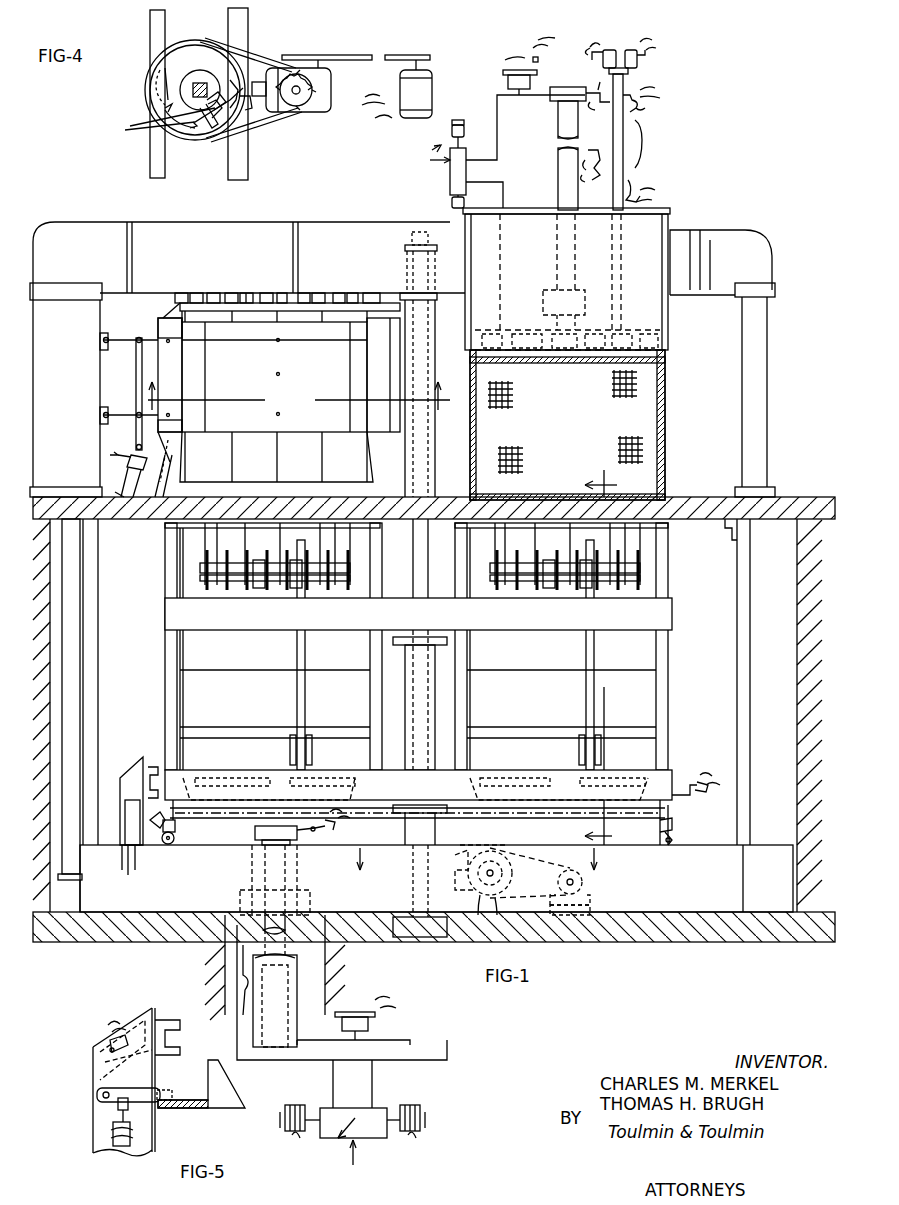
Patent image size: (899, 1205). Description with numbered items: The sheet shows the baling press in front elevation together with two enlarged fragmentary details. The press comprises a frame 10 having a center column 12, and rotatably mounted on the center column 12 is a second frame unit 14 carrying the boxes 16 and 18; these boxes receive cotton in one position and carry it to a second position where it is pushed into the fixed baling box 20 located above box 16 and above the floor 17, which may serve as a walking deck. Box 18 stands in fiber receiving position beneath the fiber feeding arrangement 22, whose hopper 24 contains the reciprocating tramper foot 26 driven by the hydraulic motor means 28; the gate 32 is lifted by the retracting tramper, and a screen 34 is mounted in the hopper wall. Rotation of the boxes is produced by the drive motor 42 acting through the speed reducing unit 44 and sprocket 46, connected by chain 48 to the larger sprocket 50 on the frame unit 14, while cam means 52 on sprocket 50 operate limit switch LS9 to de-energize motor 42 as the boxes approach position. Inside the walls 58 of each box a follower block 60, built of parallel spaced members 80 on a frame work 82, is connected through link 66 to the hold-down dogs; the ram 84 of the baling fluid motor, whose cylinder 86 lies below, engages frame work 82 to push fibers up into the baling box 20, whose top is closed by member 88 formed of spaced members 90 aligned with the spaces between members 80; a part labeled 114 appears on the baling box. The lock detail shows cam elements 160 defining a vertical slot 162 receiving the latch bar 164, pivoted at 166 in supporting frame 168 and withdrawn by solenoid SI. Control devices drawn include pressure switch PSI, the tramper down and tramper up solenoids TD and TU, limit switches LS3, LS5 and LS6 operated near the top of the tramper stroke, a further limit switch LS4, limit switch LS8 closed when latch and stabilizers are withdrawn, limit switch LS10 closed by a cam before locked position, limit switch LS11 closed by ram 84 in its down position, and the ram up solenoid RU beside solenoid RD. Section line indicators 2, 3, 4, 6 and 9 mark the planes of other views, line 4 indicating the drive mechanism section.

In FIG. 1, the frame 2 is at (55, 785).
In FIG. 1, the upper housing 3 is at (762, 220).
In FIG. 1, the line 4— 4 is at (475, 873).
In FIG. 1, the section line 6- 6 is at (592, 659).
In FIG. 1, the section line 9- 9 is at (298, 385).
In FIG. 1, the frame 10 is at (745, 890).
In FIG. 1, the center column 12 is at (420, 582).
In FIG. 1, the second frame unit 14 is at (660, 616).
In FIG. 4, the second frame unit 14 is at (238, 172).
In FIG. 1, the box 16 is at (190, 656).
In FIG. 1, the floor 17 is at (795, 510).
In FIG. 1, the box 18 is at (645, 658).
In FIG. 1, the baling box 20 is at (325, 388).
In FIG. 1, the fiber feeding arrangement 22 is at (630, 420).
In FIG. 1, the hopper 24 is at (572, 440).
In FIG. 1, the tramper foot 26 is at (549, 365).
In FIG. 1, the hydraulic motor means 28 is at (560, 200).
In FIG. 1, the gate 32 is at (676, 224).
In FIG. 1, the screen 34 is at (645, 452).
In FIG. 1, the drive motor 42 is at (575, 912).
In FIG. 4, the drive motor 42 is at (445, 93).
In FIG. 1, the speed reducing unit 44 is at (478, 895).
In FIG. 4, the speed reducing unit 44 is at (322, 100).
In FIG. 4, the sprocket 46 is at (322, 86).
In FIG. 4, the chain 48 is at (275, 64).
In FIG. 1, the larger sprocket 50 is at (387, 858).
In FIG. 4, the larger sprocket 50 is at (196, 58).
In FIG. 4, the cam means 52 is at (170, 112).
In FIG. 1, the walls of the boxes 58 is at (182, 715).
In FIG. 1, the follower block 60 is at (338, 790).
In FIG. 1, the link 66 is at (300, 715).
In FIG. 1, the parallel spaced members 80 is at (190, 790).
In FIG. 1, the frame work 82 is at (215, 812).
In FIG. 1, the ram 84 is at (256, 828).
In FIG. 1, the cylinder 86 is at (285, 932).
In FIG. 1, the member 88 is at (274, 296).
In FIG. 1, the members 90 is at (238, 298).
In FIG. 1, the plate 114 is at (185, 374).
In FIG. 5, the cam elements 160 is at (192, 1108).
In FIG. 5, the vertical slot 162 is at (168, 1096).
In FIG. 5, the latch bar 164 is at (145, 1022).
In FIG. 5, the pivot 166 is at (100, 1100).
In FIG. 5, the supporting frame 168 is at (160, 1064).
In FIG. 1, the limit switch LS3 is at (640, 112).
In FIG. 1, the limit switch LS4 is at (645, 50).
In FIG. 1, the limit switch LS5 is at (600, 92).
In FIG. 1, the limit switch LS6 is at (612, 50).
In FIG. 5, the limit switch LS8 is at (110, 1050).
In FIG. 4, the limit switch LS9 is at (252, 100).
In FIG. 1, the limit switch LS10 is at (690, 800).
In FIG. 1, the limit switch LS11 is at (338, 828).
In FIG. 1, the pressure switch PSI is at (504, 74).
In FIG. 1, the tramper down control solenoid TD is at (448, 132).
In FIG. 1, the tramper up solenoid TU is at (450, 204).
In FIG. 5, the solenoid SI is at (132, 1130).
In FIG. 5, the solenoid RD is at (300, 1135).
In FIG. 5, the ram control solenoid RU is at (407, 1135).